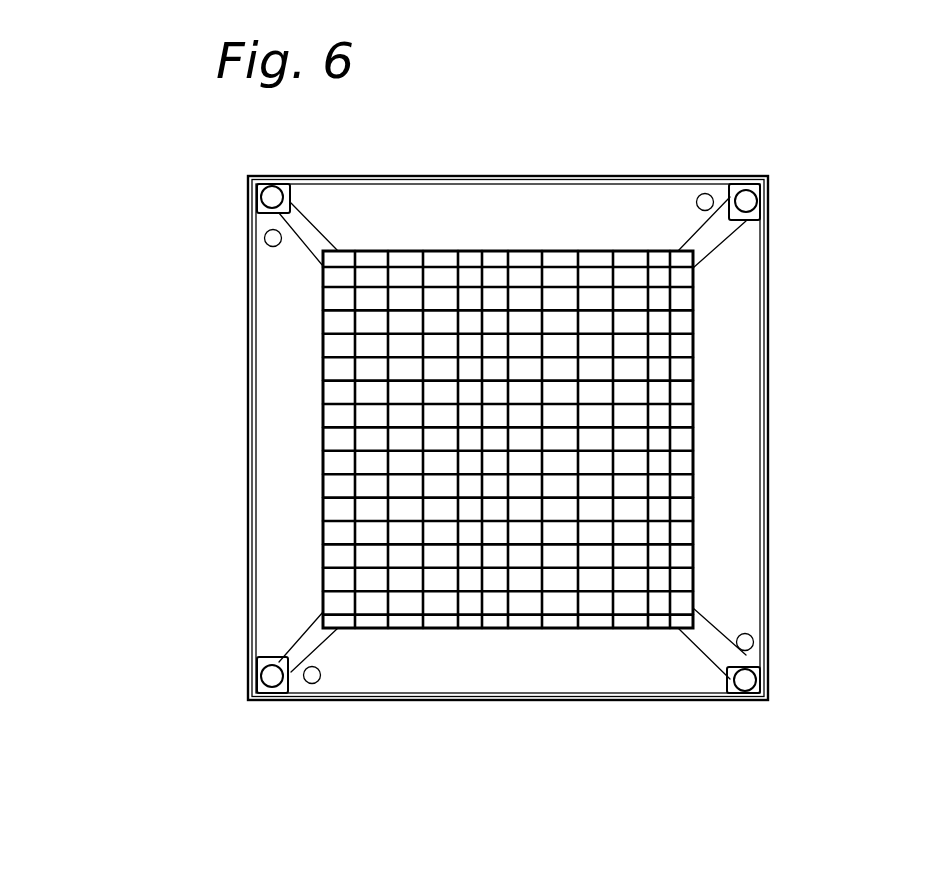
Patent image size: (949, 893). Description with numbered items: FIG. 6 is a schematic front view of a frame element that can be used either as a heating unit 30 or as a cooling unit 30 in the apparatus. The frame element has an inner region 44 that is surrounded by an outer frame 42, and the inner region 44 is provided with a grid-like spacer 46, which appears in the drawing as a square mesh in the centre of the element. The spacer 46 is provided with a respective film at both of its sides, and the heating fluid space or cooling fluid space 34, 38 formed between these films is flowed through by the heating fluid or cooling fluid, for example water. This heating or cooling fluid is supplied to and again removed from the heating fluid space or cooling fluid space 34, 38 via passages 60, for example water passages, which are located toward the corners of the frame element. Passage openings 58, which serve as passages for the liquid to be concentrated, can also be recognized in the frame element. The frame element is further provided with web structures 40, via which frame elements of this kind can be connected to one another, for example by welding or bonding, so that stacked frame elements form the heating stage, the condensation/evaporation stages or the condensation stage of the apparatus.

The heating unit / cooling unit 30 is at (803, 136).
The heating fluid space 34 is at (518, 468).
The cooling fluid space 38 is at (518, 468).
The web structure 40 is at (355, 181).
The outer frame 42 is at (403, 193).
The inner region 44 is at (365, 450).
The spacer 46 is at (402, 468).
The passage opening 58 is at (283, 235).
The passage 60 is at (307, 637).